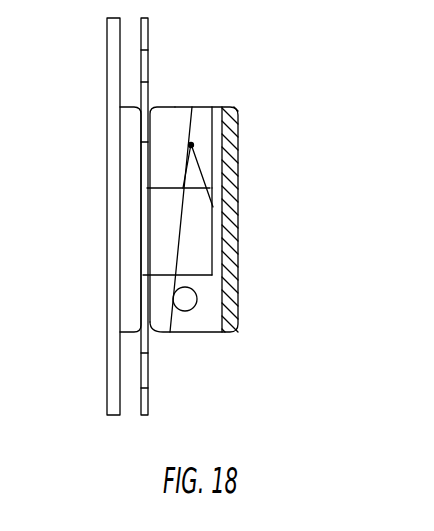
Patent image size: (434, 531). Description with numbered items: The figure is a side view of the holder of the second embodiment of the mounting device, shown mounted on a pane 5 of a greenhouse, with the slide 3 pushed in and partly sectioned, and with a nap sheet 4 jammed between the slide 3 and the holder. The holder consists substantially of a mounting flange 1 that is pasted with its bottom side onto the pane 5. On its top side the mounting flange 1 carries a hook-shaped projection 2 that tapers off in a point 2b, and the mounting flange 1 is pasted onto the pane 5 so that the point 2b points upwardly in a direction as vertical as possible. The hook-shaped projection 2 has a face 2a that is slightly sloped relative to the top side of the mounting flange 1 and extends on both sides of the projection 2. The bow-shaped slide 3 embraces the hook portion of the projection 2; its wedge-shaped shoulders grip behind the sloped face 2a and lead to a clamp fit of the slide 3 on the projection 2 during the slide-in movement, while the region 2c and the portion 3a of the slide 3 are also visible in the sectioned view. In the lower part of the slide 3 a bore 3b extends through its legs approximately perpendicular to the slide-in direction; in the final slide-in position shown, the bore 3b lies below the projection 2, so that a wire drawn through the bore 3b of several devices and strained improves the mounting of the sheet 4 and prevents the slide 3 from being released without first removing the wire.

The mounting flange 1 is at (122, 123).
The hook-shaped projection 2 is at (155, 238).
The sloped face 2a is at (176, 212).
The point 2b is at (192, 143).
The slider recess 2c is at (194, 224).
The slide 3 is at (242, 273).
The guide slot 3a is at (168, 162).
The bore 3b is at (183, 311).
The sheet 4 is at (148, 38).
The pane 5 is at (113, 43).